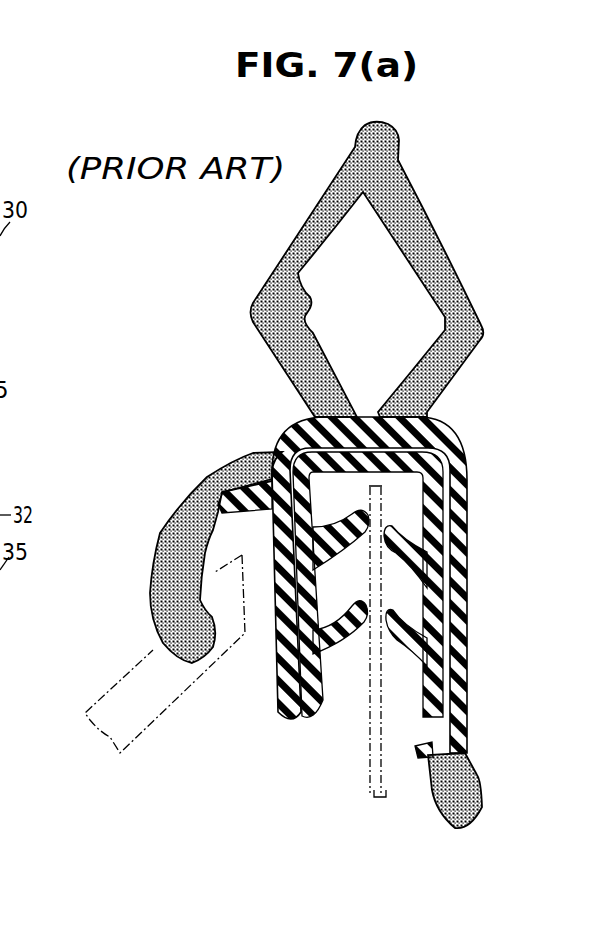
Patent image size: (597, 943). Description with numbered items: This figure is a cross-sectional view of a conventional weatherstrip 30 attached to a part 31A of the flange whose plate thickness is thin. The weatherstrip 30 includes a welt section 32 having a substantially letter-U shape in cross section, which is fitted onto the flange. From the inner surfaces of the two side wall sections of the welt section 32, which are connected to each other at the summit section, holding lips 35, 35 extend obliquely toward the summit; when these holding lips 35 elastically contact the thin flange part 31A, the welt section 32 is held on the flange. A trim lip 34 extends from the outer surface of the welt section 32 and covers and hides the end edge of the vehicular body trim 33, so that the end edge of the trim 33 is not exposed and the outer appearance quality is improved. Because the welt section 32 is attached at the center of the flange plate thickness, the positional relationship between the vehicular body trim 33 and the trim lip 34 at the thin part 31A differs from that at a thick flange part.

The weatherstrip 30 is at (463, 255).
The thin part of flange 31A is at (365, 725).
The welt section 32 is at (467, 515).
The vehicular body trim 33 is at (127, 670).
The trim lip 34 is at (157, 540).
The holding lip 35 is at (377, 508).